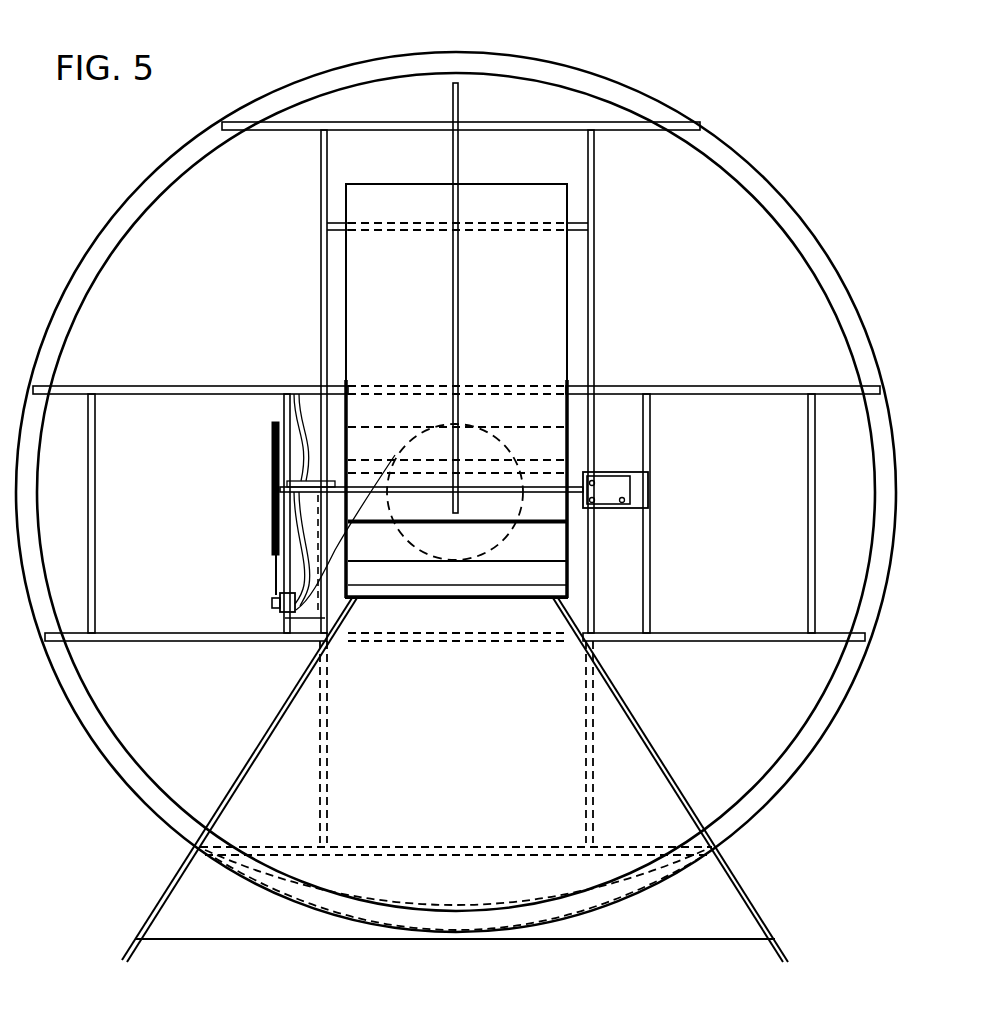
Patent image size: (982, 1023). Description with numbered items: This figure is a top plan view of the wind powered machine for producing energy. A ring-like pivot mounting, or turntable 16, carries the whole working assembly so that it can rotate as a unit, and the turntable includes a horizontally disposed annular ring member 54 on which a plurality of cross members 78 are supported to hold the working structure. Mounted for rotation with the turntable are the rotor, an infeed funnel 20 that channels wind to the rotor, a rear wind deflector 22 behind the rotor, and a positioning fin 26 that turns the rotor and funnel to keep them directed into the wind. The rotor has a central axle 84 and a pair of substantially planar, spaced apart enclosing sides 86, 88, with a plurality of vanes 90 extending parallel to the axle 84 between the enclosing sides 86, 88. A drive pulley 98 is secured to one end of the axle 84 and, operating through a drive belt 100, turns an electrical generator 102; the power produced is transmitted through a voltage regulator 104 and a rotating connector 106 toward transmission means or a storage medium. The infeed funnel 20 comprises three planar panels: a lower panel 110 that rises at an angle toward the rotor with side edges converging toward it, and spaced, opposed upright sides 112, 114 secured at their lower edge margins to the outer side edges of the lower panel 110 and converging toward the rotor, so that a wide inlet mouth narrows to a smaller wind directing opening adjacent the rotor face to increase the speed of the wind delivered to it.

The turntable 16 is at (764, 184).
The infeed funnel 20 is at (290, 951).
The rear wind deflector 22 is at (532, 291).
The positioning fin 26 is at (452, 275).
The ring member 54 is at (597, 84).
The cross members 78 is at (649, 131).
The central axle 84 is at (545, 487).
The enclosing side 86 is at (348, 571).
The enclosing side 88 is at (570, 557).
The vanes 90 is at (405, 570).
The drive pulley 98 is at (271, 473).
The drive belt 100 is at (275, 582).
The electrical generator 102 is at (272, 603).
The voltage regulator 104 is at (293, 386).
The rotating connector 106 is at (478, 435).
The lower panel 110 is at (441, 743).
The upright side 112 is at (156, 903).
The upright side 114 is at (633, 713).